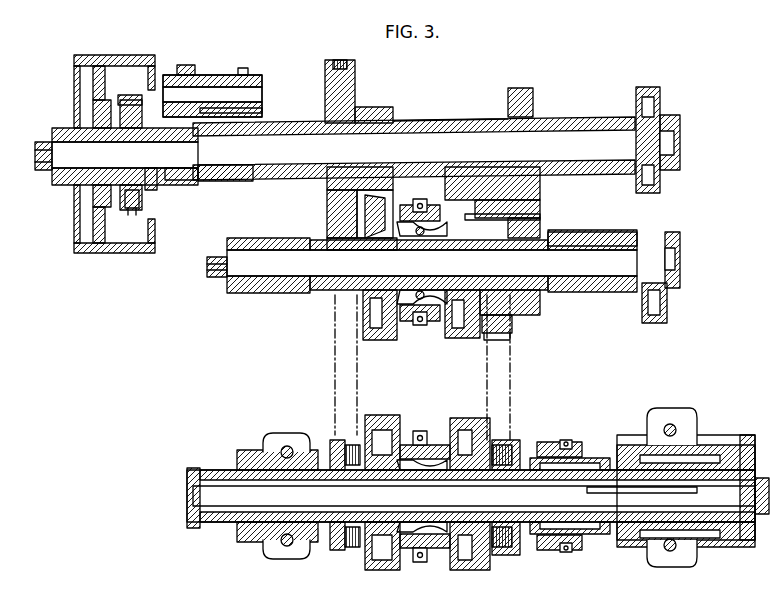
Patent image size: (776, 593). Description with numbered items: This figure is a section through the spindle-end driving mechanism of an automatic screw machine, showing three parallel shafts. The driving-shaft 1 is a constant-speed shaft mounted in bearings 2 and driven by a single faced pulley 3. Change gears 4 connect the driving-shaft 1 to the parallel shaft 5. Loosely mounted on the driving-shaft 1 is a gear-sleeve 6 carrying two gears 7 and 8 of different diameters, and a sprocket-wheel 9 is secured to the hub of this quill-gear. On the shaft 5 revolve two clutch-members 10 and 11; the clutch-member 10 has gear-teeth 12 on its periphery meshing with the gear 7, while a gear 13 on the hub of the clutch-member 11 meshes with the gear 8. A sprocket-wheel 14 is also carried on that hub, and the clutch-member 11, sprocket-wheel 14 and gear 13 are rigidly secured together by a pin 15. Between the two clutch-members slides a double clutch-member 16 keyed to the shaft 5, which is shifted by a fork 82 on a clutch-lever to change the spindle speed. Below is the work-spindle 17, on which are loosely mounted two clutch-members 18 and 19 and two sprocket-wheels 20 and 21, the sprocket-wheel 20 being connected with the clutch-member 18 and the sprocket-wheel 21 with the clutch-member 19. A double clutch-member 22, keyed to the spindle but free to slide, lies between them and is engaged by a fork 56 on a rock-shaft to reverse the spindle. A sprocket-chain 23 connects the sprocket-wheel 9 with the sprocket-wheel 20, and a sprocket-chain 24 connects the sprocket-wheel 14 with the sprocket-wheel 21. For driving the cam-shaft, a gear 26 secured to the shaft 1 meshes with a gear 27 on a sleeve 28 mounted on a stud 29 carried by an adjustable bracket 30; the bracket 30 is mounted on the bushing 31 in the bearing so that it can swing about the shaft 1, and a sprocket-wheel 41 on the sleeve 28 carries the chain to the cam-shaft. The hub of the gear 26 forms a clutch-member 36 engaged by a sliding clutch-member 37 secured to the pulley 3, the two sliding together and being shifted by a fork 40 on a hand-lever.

The driving-shaft 1 is at (62, 160).
The bearings 2 is at (283, 127).
The single faced pulley 3 is at (96, 56).
The change gears 4 is at (648, 87).
The parallel shaft 5 is at (278, 268).
The gear-sleeve 6 is at (432, 122).
The gear 7 is at (372, 108).
The gear 8 is at (522, 88).
The sprocket-wheel 9 is at (325, 89).
The clutch-member 10 is at (357, 298).
The clutch-member 11 is at (475, 338).
The gear-teeth 12 is at (380, 332).
The gear 13 is at (540, 306).
The sprocket-wheel 14 is at (514, 325).
The pin 15 is at (540, 219).
The double clutch-member 16 is at (402, 328).
The work-spindle 17 is at (530, 452).
The clutch-member 18 is at (372, 570).
The clutch-member 19 is at (480, 570).
The sprocket-wheel 20 is at (345, 550).
The sprocket-wheel 21 is at (508, 553).
The double clutch-member 22 is at (450, 558).
The sprocket-chain 23 is at (333, 385).
The sprocket-chain 24 is at (513, 375).
The gear 26 is at (190, 184).
The gear 27 is at (192, 65).
The sleeve 28 is at (217, 75).
The stud 29 is at (264, 92).
The adjustable bracket 30 is at (262, 113).
The bushing 31 is at (248, 181).
The clutch-member 36 is at (156, 183).
The sliding clutch-member 37 is at (140, 192).
The fork 40 is at (140, 200).
The sprocket-wheel 41 is at (249, 69).
The fork 56 is at (435, 430).
The fork 82 is at (415, 204).